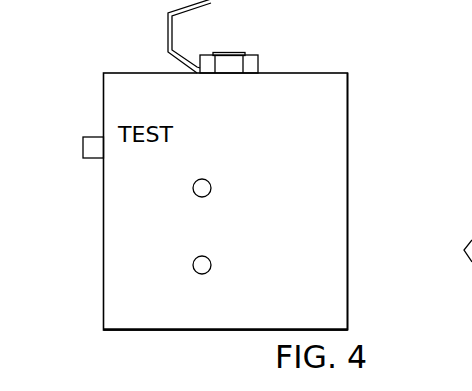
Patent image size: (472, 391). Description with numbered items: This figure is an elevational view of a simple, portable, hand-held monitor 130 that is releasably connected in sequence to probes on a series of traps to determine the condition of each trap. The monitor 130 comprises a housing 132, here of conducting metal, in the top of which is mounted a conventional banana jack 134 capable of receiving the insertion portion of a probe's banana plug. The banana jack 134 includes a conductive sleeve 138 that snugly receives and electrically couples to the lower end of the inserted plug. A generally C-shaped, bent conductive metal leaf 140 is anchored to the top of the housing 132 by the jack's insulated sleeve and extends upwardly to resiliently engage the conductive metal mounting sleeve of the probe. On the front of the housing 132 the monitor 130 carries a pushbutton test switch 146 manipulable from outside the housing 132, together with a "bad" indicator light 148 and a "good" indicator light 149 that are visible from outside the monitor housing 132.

The monitor 130 is at (358, 113).
The housing 132 is at (335, 180).
The banana jack 134 is at (252, 62).
The conductive sleeve 138 is at (240, 53).
The conductive metal leaf 140 is at (167, 32).
The pushbutton test switch 146 is at (84, 142).
The "bad" indicator light 148 is at (203, 180).
The "good" indicator light 149 is at (203, 257).